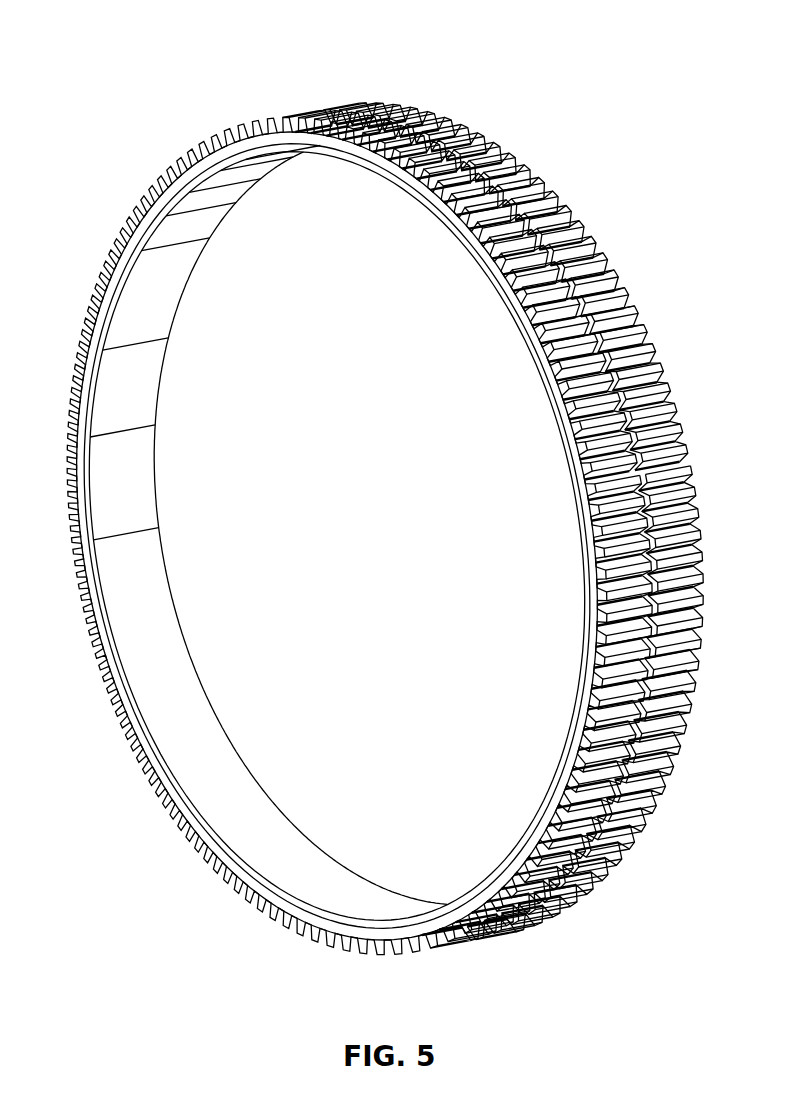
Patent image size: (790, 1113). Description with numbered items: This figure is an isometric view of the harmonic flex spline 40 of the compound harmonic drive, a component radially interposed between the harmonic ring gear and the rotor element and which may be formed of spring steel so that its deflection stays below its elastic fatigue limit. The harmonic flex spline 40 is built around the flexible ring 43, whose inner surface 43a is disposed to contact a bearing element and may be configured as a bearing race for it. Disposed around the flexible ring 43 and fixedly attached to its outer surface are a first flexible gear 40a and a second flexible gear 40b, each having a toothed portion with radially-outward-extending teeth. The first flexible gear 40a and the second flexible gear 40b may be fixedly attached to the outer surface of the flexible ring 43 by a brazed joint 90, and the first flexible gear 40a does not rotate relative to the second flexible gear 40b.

The harmonic flex spline 40 is at (121, 42).
The first flexible gear 40a is at (463, 120).
The second flexible gear 40b is at (308, 108).
The flexible ring 43 is at (151, 372).
The inner surface 43a is at (187, 671).
The brazed joint 90 is at (593, 580).